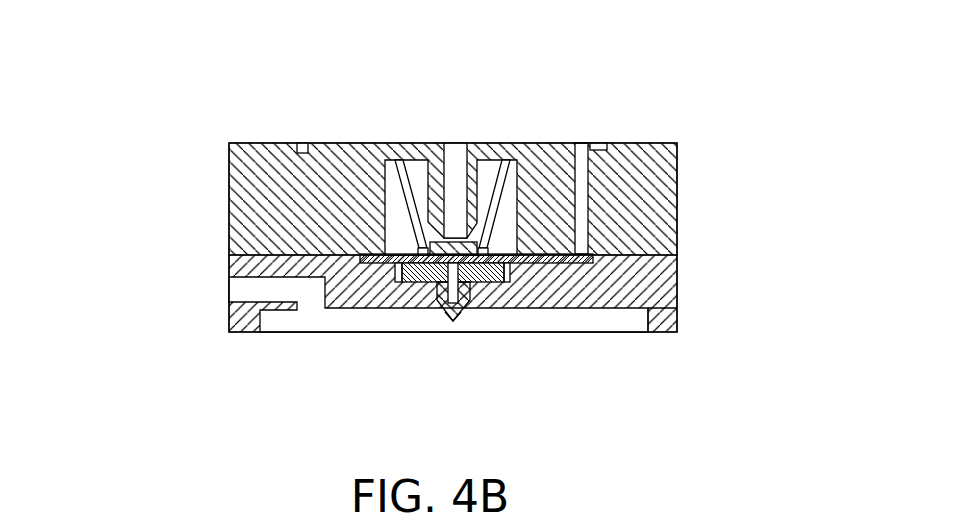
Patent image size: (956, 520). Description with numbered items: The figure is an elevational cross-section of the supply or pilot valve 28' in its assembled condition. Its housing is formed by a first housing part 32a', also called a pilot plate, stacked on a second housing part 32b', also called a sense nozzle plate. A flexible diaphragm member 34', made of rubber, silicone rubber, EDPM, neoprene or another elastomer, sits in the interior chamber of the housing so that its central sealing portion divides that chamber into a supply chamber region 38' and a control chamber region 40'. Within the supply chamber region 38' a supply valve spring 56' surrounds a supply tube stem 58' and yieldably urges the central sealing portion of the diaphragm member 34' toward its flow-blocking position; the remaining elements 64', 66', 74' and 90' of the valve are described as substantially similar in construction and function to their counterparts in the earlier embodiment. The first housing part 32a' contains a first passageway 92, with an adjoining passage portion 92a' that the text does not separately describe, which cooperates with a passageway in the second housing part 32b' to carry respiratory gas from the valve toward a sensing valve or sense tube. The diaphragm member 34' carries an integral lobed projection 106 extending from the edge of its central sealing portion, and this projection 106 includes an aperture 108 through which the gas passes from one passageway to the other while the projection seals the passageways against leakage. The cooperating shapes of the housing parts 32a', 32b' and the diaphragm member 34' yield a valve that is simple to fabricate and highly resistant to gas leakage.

The supply valve 28' is at (401, 188).
The first housing part 32a' is at (395, 199).
The second housing part 32b' is at (517, 293).
The flexible diaphragm member 34' is at (295, 252).
The supply chamber region 38' is at (270, 207).
The control chamber region 40' is at (519, 337).
The supply valve spring 56' is at (484, 150).
The supply tube stem 58' is at (414, 150).
The supply valve element 64' is at (426, 141).
The supply valve element 66' is at (490, 328).
The supply valve element 74' is at (411, 328).
The supply valve element 90' is at (429, 352).
The first passageway 92 is at (601, 176).
The passage inlet 92a' is at (554, 98).
The means for enabling fluid communication and sealing 106 is at (603, 242).
The aperture 108 is at (578, 285).